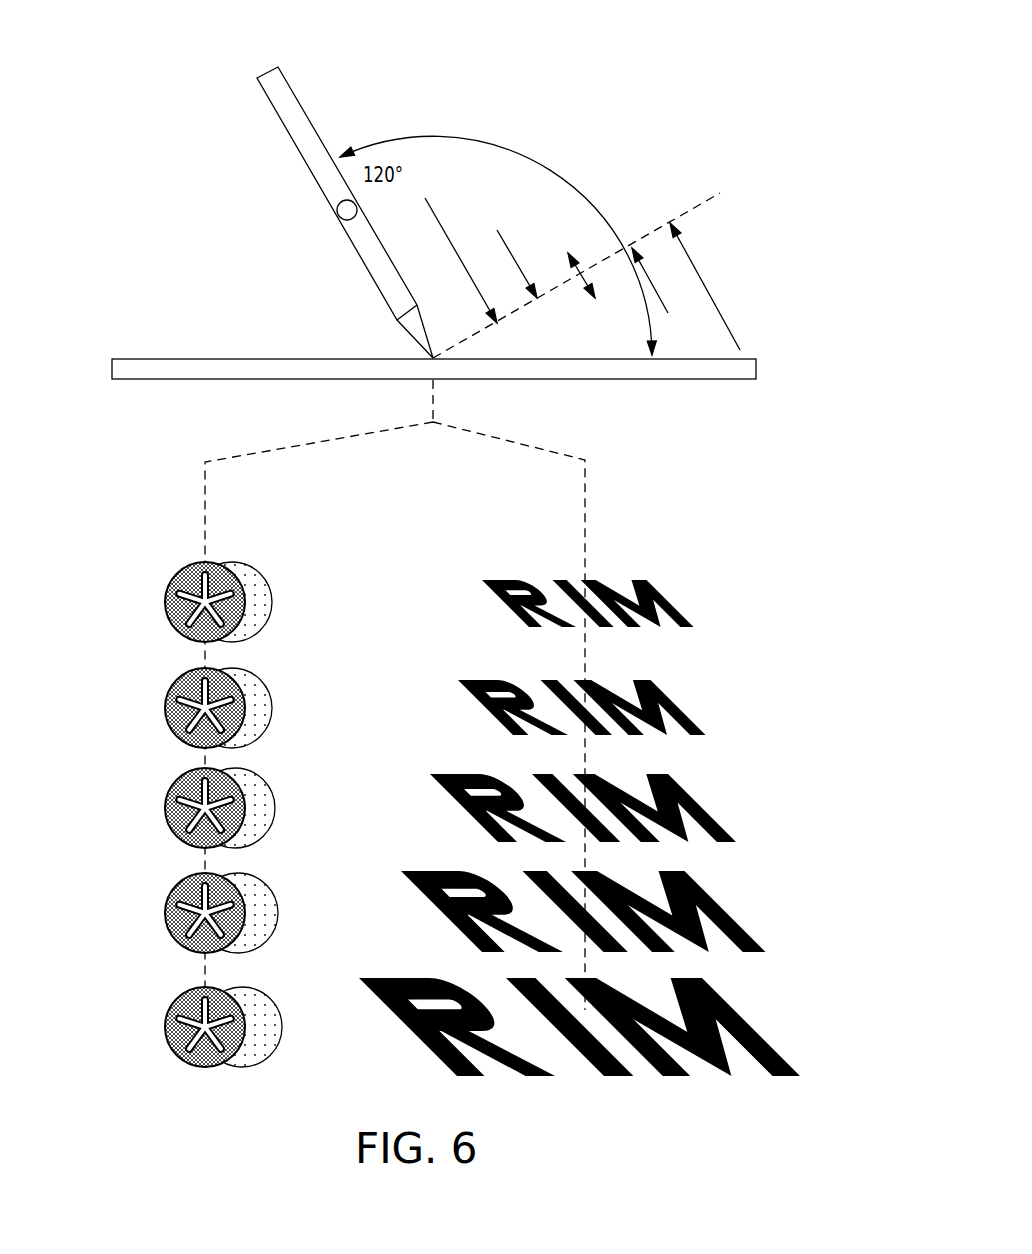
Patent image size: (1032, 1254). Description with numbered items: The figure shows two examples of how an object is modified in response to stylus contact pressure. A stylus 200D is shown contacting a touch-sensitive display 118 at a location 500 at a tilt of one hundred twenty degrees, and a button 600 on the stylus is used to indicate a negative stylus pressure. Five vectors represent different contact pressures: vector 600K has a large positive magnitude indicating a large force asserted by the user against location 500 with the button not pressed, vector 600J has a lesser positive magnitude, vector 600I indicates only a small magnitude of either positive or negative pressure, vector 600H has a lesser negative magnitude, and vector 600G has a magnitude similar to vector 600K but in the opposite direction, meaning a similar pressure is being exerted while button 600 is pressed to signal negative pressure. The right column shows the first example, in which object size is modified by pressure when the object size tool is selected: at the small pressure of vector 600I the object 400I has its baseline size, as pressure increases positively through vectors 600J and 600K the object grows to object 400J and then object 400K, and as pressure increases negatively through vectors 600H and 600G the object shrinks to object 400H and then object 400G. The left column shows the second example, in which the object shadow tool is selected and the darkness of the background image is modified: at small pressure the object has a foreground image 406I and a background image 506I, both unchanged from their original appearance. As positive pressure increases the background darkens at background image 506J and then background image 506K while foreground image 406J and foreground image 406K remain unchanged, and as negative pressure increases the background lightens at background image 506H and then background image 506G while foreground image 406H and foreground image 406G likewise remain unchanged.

The stylus 200D is at (262, 72).
The button 600 is at (337, 211).
The vector 600K is at (427, 198).
The vector 600J is at (498, 229).
The vector 600I is at (569, 252).
The vector 600H is at (641, 244).
The vector 600G is at (704, 285).
The touch-sensitive display 118 is at (757, 370).
The location 500 is at (435, 361).
The foreground image 406G is at (165, 600).
The foreground image 406H is at (165, 706).
The foreground image 406I is at (165, 806).
The foreground image 406J is at (165, 912).
The foreground image 406K is at (165, 1025).
The background image 506G is at (272, 603).
The background image 506H is at (272, 710).
The background image 506I is at (275, 810).
The background image 506J is at (278, 915).
The background image 506K is at (282, 1030).
The object 400G is at (687, 613).
The object 400H is at (707, 715).
The object 400I is at (732, 816).
The object 400J is at (759, 928).
The object 400K is at (803, 1052).